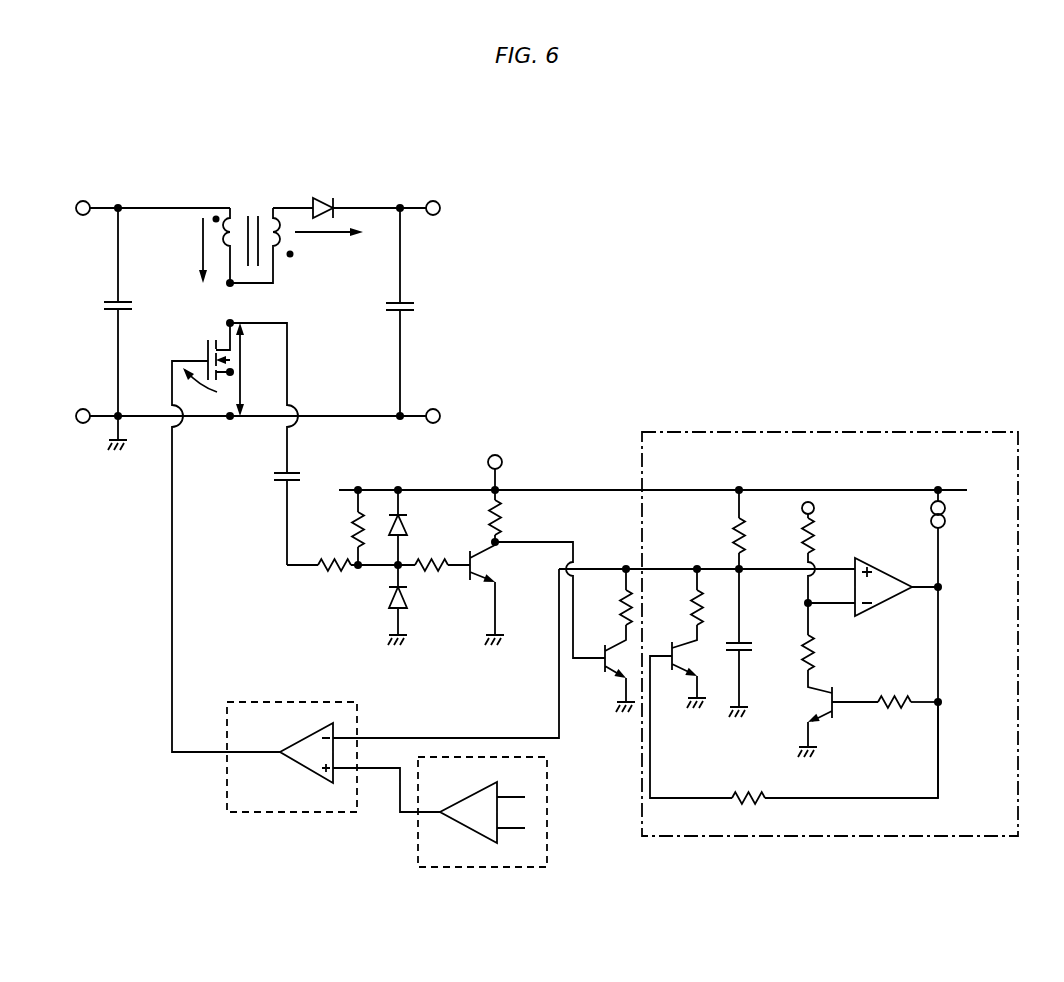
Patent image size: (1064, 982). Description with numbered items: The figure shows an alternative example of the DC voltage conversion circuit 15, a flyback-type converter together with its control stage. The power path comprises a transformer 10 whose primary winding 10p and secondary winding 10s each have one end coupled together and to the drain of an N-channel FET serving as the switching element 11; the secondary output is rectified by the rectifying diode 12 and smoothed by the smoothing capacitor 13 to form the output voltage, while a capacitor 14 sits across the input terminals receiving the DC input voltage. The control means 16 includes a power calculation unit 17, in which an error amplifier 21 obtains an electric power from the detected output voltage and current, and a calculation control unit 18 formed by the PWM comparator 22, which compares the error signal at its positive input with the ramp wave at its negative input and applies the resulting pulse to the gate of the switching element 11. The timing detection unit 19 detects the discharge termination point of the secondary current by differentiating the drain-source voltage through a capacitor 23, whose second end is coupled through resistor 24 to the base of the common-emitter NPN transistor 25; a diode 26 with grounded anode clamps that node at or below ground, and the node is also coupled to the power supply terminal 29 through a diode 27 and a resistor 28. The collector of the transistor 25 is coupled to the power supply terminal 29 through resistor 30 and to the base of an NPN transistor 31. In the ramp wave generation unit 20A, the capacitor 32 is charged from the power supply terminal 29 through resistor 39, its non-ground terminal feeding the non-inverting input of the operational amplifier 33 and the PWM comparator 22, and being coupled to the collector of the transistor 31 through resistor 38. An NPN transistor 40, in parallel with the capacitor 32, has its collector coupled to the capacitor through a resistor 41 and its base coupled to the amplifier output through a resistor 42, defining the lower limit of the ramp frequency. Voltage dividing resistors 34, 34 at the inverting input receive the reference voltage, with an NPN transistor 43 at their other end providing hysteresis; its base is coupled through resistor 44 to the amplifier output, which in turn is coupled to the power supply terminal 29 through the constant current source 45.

The transformer 10 is at (303, 155).
The primary winding 10p is at (232, 206).
The secondary winding 10s is at (283, 206).
The switching element 11 is at (204, 355).
The rectifying diode 12 is at (318, 198).
The smoothing capacitor 13 is at (406, 298).
The capacitor 14 is at (124, 298).
The DC voltage conversion circuit 15 is at (604, 197).
The control means 16 is at (577, 864).
The power calculation unit 17 is at (480, 867).
The calculation control unit 18 is at (290, 702).
The timing detection unit 19 is at (276, 544).
The ramp wave generation unit 20A is at (891, 404).
The error amplifier 21 is at (468, 828).
The PWM comparator 22 is at (298, 766).
The capacitor 23 is at (290, 466).
The resistor 24 is at (437, 577).
The NPN transistor 25 is at (494, 561).
The diode 26 is at (386, 600).
The diode 27 is at (405, 520).
The resistor 28 is at (352, 518).
The power supply terminal 29 is at (495, 455).
The resistor 30 is at (505, 515).
The NPN transistor 31 is at (604, 673).
The capacitor 32 is at (753, 640).
The operational amplifier 33 is at (878, 563).
The voltage dividing resistors 34 is at (815, 542).
The resistor 38 is at (622, 598).
The resistor 39 is at (736, 542).
The NPN transistor 40 is at (690, 662).
The resistor 41 is at (692, 598).
The resistor 42 is at (730, 792).
The NPN transistor 43 is at (838, 715).
The resistor 44 is at (884, 708).
The constant current source 45 is at (946, 521).